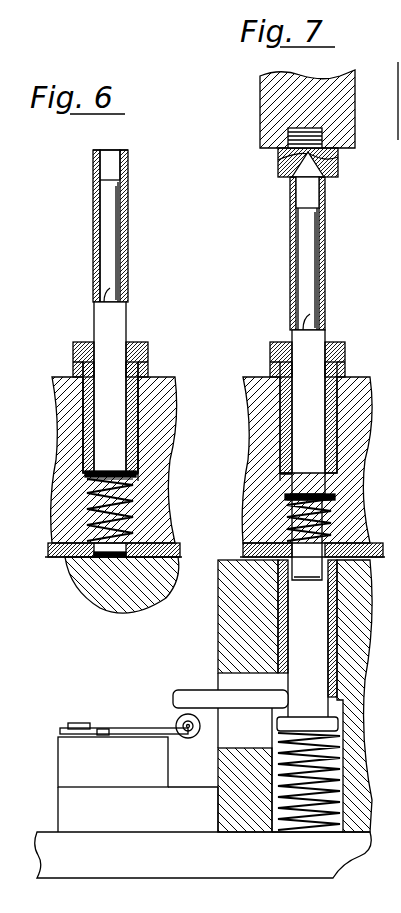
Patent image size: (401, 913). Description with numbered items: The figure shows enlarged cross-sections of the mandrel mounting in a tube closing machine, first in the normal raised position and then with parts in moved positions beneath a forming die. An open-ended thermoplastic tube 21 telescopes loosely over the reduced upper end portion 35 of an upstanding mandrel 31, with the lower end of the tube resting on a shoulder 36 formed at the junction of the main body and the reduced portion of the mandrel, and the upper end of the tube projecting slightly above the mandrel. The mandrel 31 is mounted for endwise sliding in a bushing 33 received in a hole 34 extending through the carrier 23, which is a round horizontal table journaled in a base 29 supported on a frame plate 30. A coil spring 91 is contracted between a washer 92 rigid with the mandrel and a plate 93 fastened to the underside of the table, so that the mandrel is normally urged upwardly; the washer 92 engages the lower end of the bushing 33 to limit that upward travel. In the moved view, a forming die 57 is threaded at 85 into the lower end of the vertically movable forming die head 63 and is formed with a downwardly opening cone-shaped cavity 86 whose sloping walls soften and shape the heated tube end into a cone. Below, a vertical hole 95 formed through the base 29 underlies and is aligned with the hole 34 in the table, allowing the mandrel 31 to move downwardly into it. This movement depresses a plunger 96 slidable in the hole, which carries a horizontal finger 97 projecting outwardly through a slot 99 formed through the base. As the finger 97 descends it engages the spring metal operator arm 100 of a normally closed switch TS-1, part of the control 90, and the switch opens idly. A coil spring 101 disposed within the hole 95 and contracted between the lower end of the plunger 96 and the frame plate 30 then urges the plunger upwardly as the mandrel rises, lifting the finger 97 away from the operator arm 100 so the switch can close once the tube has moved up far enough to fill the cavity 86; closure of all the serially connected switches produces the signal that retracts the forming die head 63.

In FIG. 6, the tube 21 is at (93, 205).
In FIG. 7, the tube 21 is at (290, 262).
In FIG. 6, the reduced upper end portion 35 is at (100, 237).
In FIG. 7, the reduced upper end portion 35 is at (318, 272).
In FIG. 6, the shoulder 36 is at (105, 300).
In FIG. 7, the shoulder 36 is at (322, 318).
In FIG. 6, the mandrel 31 is at (124, 312).
In FIG. 7, the mandrel 31 is at (296, 338).
In FIG. 6, the carrier 23 is at (60, 382).
In FIG. 7, the carrier 23 is at (253, 425).
In FIG. 6, the bushing 33 is at (80, 403).
In FIG. 7, the bushing 33 is at (284, 450).
In FIG. 6, the hole 34 is at (140, 503).
In FIG. 7, the hole 34 is at (278, 494).
In FIG. 6, the coil spring 91 is at (87, 500).
In FIG. 7, the coil spring 91 is at (337, 524).
In FIG. 6, the washer 92 is at (95, 478).
In FIG. 7, the washer 92 is at (320, 500).
In FIG. 6, the plate 93 is at (56, 558).
In FIG. 7, the plate 93 is at (265, 545).
In FIG. 6, the base 29 is at (90, 597).
In FIG. 7, the base 29 is at (360, 770).
In FIG. 7, the forming die head 63 is at (262, 118).
In FIG. 7, the threaded connection 85 is at (326, 134).
In FIG. 7, the cone-shaped cavity 86 is at (295, 170).
In FIG. 7, the forming die 57 is at (285, 178).
In FIG. 7, the vertical hole 95 is at (280, 624).
In FIG. 7, the plunger 96 is at (300, 640).
In FIG. 7, the horizontal finger 97 is at (184, 694).
In FIG. 7, the slot 99 is at (228, 676).
In FIG. 7, the operator arm 100 is at (148, 732).
In FIG. 7, the switch TS-1 is at (78, 757).
In FIG. 7, the control 90 is at (54, 801).
In FIG. 7, the coil spring 101 is at (310, 825).
In FIG. 7, the frame plate 30 is at (125, 876).